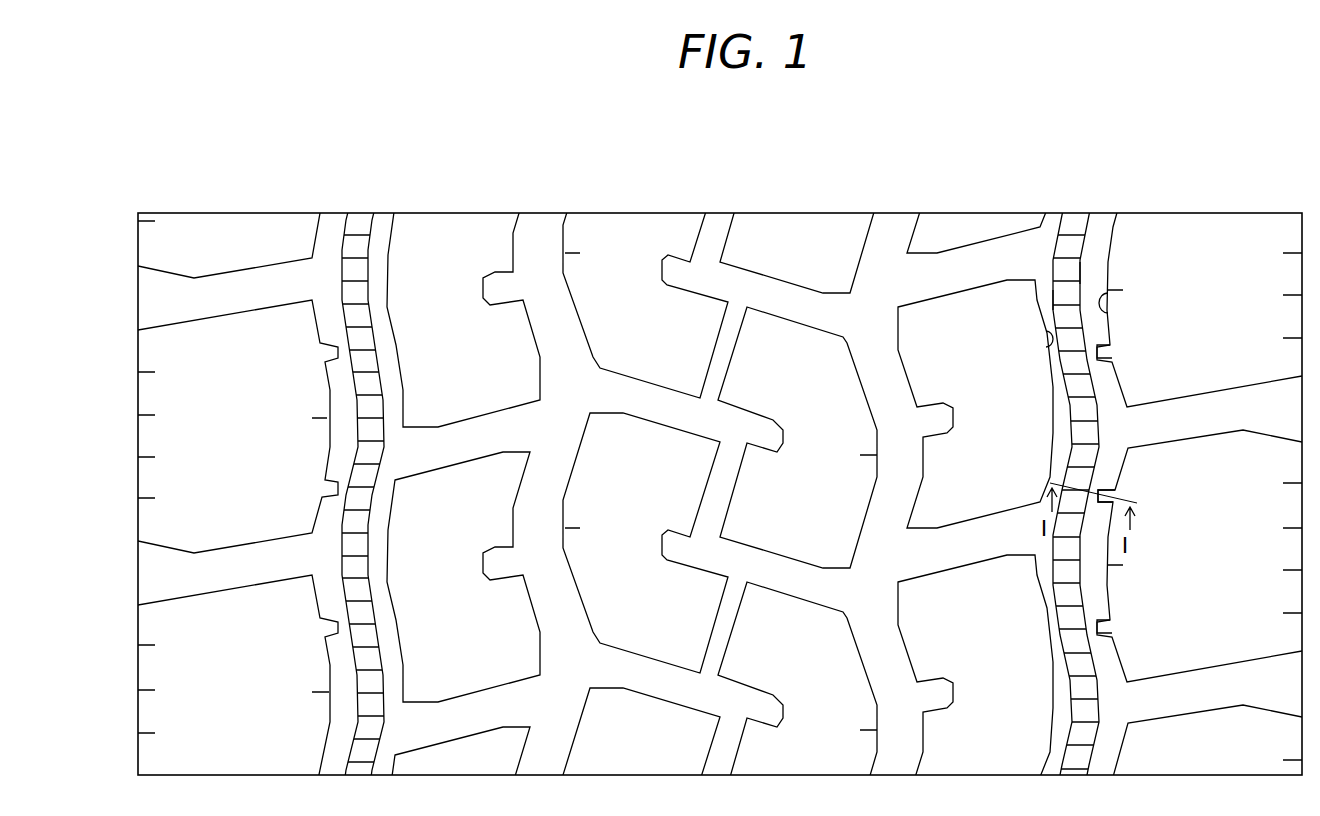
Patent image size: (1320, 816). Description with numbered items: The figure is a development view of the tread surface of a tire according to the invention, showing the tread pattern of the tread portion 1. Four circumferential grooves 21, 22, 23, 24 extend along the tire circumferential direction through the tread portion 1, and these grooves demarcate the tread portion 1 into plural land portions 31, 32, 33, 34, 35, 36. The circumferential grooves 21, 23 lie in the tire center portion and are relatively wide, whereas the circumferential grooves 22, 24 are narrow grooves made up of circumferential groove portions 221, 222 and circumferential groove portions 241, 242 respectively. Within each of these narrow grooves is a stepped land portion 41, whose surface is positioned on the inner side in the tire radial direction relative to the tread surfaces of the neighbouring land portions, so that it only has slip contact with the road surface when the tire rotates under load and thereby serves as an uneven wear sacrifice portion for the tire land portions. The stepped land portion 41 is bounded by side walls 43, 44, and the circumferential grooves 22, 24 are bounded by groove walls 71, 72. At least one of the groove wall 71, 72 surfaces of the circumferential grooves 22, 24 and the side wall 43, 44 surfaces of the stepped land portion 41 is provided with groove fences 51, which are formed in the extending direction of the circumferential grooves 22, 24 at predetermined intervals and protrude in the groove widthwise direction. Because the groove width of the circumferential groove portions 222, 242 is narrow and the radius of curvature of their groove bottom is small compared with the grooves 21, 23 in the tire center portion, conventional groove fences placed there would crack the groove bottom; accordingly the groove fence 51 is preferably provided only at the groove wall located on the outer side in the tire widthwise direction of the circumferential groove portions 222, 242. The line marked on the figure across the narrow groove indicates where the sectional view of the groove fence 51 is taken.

The tread portion 1 is at (810, 196).
The circumferential groove 21 is at (897, 228).
The circumferential groove 22 is at (1113, 405).
The circumferential groove portion 221 is at (1055, 224).
The circumferential groove portion 222 is at (1126, 405).
The circumferential groove 23 is at (565, 230).
The circumferential groove 24 is at (371, 400).
The circumferential groove portion 241 is at (330, 228).
The circumferential groove portion 242 is at (398, 400).
The land portion 31 is at (770, 230).
The land portion 32 is at (957, 230).
The land portion 33 is at (1195, 232).
The land portion 34 is at (652, 228).
The land portion 35 is at (490, 228).
The land portion 36 is at (218, 230).
The stepped land portion 41 is at (360, 245).
The side wall 43 is at (1080, 273).
The side wall 44 is at (1050, 298).
The groove fence 51 is at (1115, 355).
The groove wall 71 is at (1108, 303).
The groove wall 72 is at (1043, 340).